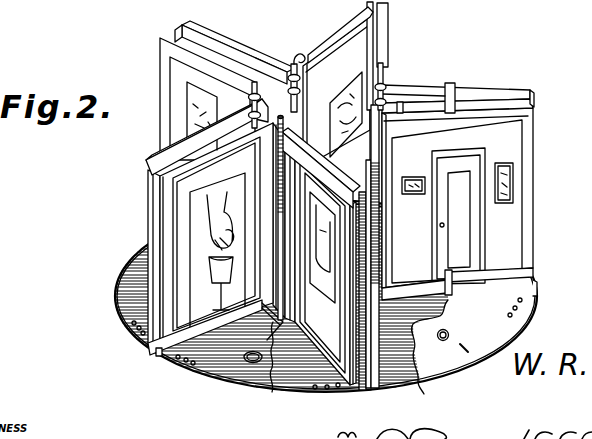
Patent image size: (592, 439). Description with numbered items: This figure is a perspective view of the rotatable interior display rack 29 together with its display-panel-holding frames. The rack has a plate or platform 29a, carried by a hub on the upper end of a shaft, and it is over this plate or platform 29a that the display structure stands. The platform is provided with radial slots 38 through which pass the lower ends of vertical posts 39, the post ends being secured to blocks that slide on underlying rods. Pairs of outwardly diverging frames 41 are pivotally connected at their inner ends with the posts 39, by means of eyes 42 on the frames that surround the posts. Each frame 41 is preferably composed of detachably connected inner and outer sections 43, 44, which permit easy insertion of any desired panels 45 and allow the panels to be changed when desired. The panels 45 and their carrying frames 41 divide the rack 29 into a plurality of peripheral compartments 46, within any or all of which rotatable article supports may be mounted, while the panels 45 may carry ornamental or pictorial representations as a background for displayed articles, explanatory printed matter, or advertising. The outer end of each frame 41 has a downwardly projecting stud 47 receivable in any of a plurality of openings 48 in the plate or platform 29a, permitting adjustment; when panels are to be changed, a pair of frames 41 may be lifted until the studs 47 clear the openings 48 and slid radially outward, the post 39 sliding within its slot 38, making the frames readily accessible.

The rotatable interior display rack 29 is at (110, 298).
The plate or platform 29a is at (464, 348).
The radial slots 38 is at (273, 357).
The vertical posts 39 is at (255, 82).
The frames 41 is at (228, 43).
The eyes 42 is at (296, 64).
The inner sections 43 is at (417, 118).
The outer sections 44 is at (168, 230).
The panels 45 is at (186, 95).
The peripheral compartments 46 is at (238, 360).
The stud 47 is at (161, 357).
The openings 48 is at (128, 328).